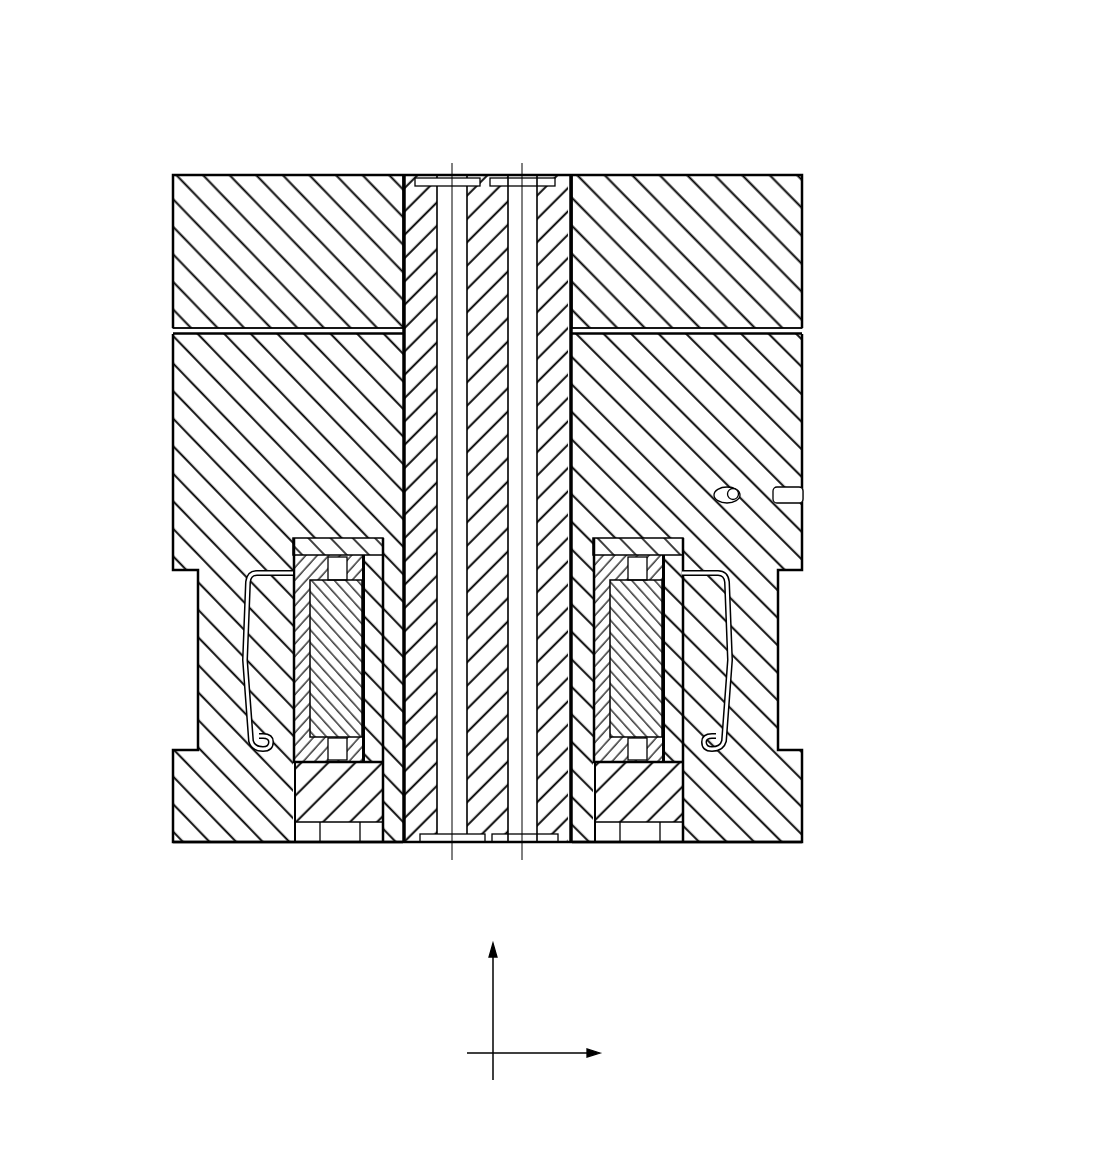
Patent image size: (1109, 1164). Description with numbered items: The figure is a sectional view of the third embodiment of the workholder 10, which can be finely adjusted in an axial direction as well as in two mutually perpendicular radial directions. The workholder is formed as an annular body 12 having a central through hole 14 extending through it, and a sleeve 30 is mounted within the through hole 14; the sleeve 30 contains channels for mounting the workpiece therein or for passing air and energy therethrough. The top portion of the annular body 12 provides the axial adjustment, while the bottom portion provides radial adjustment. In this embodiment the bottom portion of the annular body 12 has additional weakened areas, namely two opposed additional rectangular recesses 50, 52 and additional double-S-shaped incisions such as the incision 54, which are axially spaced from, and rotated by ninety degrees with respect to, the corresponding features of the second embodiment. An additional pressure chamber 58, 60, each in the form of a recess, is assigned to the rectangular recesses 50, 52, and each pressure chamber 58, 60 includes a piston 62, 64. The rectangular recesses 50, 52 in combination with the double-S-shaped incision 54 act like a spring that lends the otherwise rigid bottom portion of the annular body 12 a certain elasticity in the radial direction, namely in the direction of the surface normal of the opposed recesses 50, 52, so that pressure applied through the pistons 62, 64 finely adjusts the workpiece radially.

The joining arrangement 10 is at (192, 123).
The annular body 12 is at (272, 174).
The central through hole 14 is at (487, 443).
The sleeve 30 is at (546, 224).
The additional rectangular recess 50 is at (180, 704).
The additional rectangular recess 52 is at (798, 675).
The additional double-S-shaped incision 54 is at (243, 628).
The additional pressure chamber 58 is at (342, 748).
The additional pressure chamber 60 is at (637, 748).
The piston 62 is at (300, 748).
The piston 64 is at (688, 767).